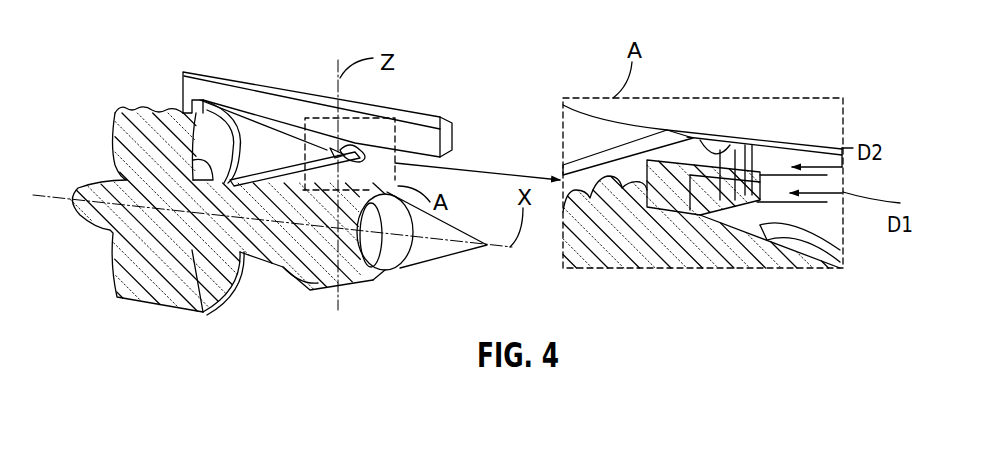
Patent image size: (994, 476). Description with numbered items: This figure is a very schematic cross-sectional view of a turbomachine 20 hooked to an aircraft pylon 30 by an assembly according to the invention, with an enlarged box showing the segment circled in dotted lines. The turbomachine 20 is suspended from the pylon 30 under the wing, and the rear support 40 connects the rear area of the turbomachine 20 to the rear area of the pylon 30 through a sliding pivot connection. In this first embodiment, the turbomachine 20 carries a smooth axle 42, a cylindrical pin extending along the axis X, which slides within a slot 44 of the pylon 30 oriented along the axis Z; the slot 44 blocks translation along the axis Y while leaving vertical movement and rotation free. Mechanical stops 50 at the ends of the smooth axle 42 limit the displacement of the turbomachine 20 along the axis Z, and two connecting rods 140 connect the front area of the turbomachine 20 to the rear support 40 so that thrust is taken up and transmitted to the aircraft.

The turbomachine 20 is at (118, 95).
The pylon 30 is at (238, 75).
The rear support 40 is at (363, 160).
The smooth axle 42 is at (717, 177).
The slot 44 is at (790, 167).
The mechanical stops 50 is at (748, 220).
The connecting rods 140 is at (265, 182).